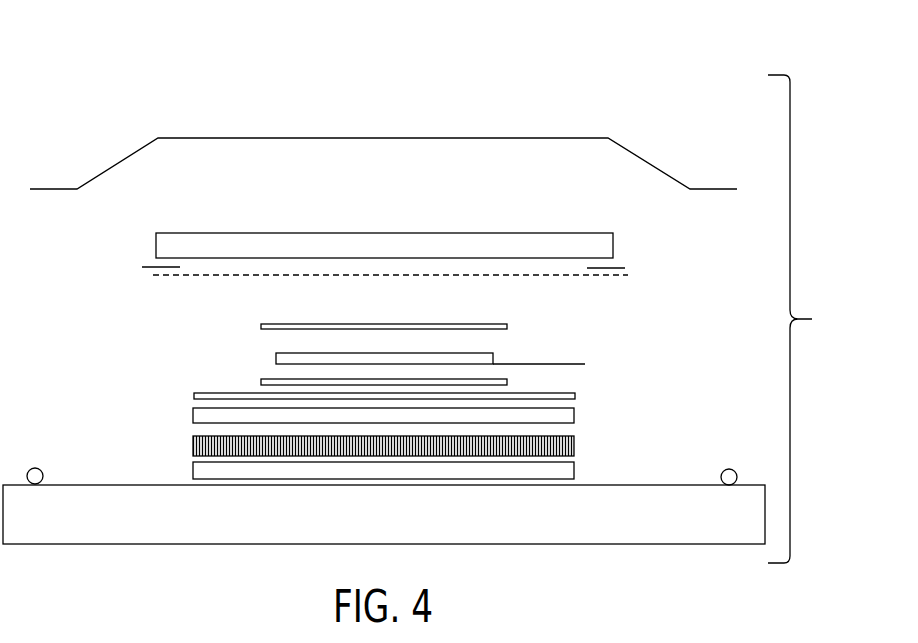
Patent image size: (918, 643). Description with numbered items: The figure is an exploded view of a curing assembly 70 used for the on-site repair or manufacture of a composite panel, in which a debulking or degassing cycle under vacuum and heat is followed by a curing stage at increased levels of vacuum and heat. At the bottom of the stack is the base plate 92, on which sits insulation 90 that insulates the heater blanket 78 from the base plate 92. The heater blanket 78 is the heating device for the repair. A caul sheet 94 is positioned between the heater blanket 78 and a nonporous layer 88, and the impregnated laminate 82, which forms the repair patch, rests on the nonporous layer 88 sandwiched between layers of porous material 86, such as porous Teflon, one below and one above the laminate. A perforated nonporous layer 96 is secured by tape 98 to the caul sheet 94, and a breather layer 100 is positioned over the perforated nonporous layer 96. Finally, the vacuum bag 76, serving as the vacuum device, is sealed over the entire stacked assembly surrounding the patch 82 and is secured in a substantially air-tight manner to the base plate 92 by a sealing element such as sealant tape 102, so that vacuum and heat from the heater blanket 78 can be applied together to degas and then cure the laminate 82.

The assembly 70 is at (585, 66).
The vacuum bag 76 is at (654, 148).
The heater blanket 78 is at (179, 445).
The impregnated laminate 82 is at (507, 348).
The porous material layers 86 is at (247, 325).
The nonporous layer 88 is at (180, 397).
The insulation 90 is at (589, 468).
The base plate 92 is at (473, 528).
The caul sheet 94 is at (589, 413).
The perforated nonporous layer 96 is at (643, 272).
The tape 98 is at (150, 267).
The breather layer 100 is at (142, 244).
The sealant tape 102 is at (35, 467).